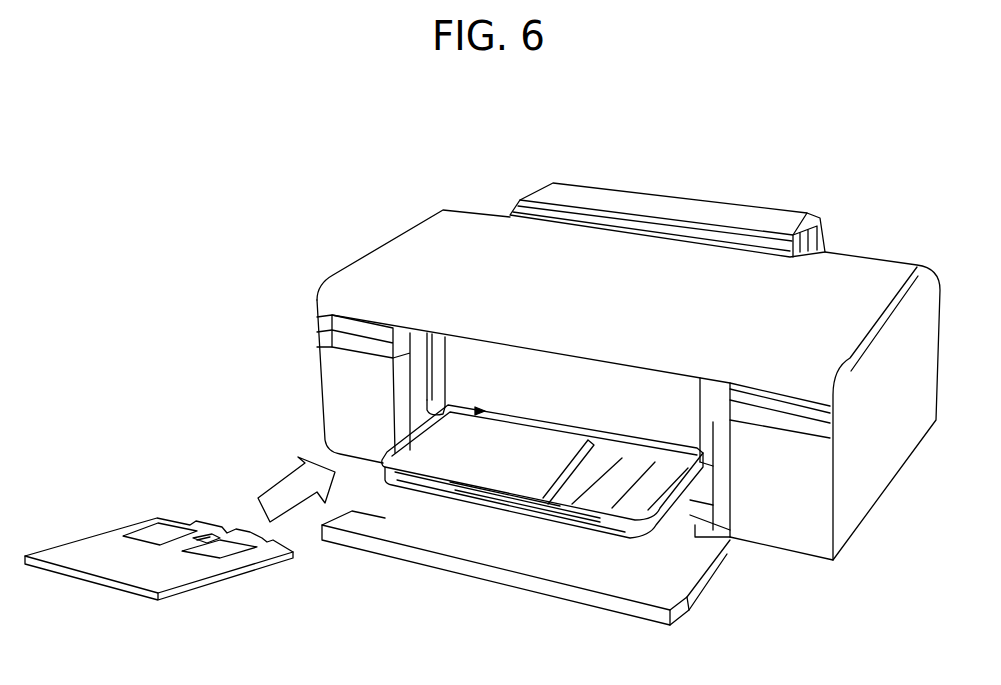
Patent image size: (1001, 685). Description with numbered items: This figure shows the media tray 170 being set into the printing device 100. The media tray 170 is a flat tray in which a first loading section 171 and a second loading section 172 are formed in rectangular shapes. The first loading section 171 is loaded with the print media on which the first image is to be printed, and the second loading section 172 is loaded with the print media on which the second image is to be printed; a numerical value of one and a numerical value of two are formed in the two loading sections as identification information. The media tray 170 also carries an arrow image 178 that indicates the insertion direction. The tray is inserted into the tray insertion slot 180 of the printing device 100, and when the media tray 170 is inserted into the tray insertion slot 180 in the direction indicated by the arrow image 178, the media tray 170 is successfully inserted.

The printing device 100 is at (410, 250).
The tray insertion slot 180 is at (437, 400).
The media tray 170 is at (197, 582).
The first loading section 171 is at (232, 549).
The second loading section 172 is at (140, 524).
The arrow image 178 is at (203, 538).